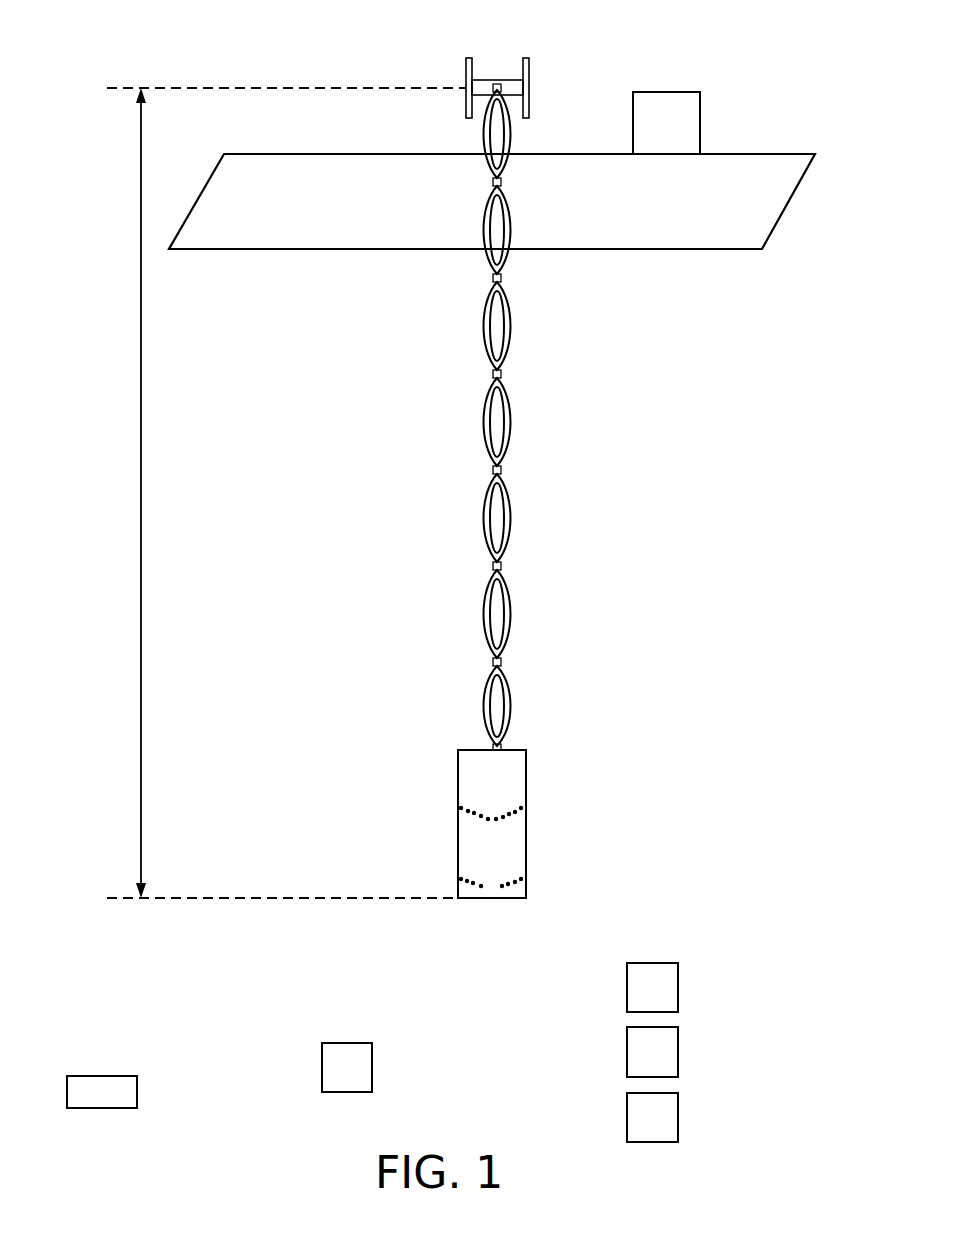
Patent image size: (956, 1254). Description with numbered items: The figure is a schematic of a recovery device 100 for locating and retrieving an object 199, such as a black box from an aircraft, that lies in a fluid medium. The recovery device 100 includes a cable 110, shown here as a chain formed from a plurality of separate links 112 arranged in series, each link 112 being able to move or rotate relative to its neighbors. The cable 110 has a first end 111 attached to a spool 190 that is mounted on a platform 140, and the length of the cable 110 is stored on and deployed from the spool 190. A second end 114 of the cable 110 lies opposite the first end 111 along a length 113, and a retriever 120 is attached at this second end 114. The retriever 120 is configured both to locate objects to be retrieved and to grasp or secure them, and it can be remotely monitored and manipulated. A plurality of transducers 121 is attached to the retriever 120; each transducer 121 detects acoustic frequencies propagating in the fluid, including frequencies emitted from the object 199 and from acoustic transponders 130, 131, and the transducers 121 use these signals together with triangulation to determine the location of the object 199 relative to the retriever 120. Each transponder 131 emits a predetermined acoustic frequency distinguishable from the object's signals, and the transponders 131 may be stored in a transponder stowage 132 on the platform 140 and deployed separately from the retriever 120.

The recovery device 100 is at (200, 60).
The cable 110 is at (499, 418).
The first end 111 is at (497, 82).
The link 112 is at (483, 411).
The length 113 is at (140, 633).
The second end 114 is at (514, 748).
The retriever 120 is at (507, 824).
The transducer 121 is at (481, 812).
The acoustic transponder 130 is at (347, 1043).
The transponder 131 is at (692, 958).
The transponder stowage 132 is at (667, 92).
The platform 140 is at (789, 204).
The spool 190 is at (466, 70).
The object 199 is at (100, 1076).